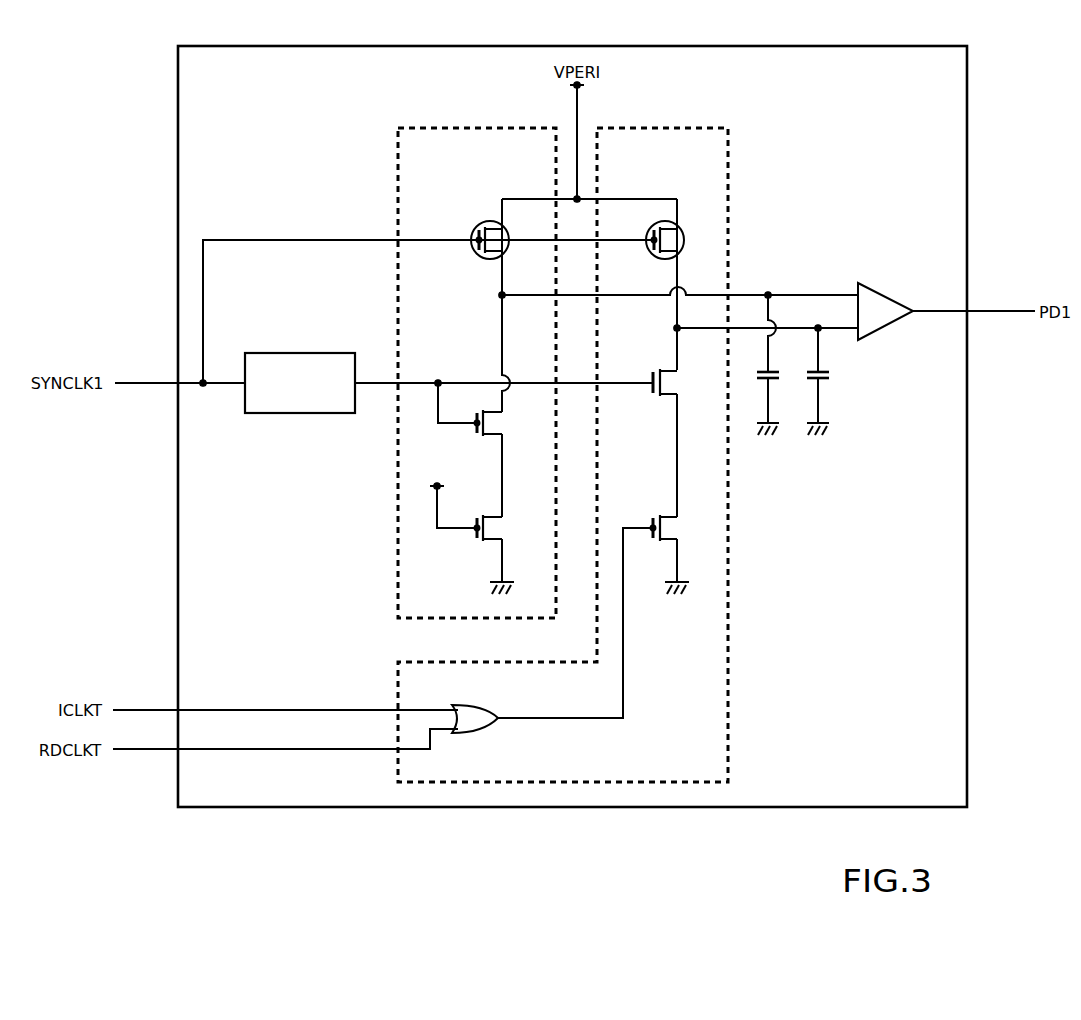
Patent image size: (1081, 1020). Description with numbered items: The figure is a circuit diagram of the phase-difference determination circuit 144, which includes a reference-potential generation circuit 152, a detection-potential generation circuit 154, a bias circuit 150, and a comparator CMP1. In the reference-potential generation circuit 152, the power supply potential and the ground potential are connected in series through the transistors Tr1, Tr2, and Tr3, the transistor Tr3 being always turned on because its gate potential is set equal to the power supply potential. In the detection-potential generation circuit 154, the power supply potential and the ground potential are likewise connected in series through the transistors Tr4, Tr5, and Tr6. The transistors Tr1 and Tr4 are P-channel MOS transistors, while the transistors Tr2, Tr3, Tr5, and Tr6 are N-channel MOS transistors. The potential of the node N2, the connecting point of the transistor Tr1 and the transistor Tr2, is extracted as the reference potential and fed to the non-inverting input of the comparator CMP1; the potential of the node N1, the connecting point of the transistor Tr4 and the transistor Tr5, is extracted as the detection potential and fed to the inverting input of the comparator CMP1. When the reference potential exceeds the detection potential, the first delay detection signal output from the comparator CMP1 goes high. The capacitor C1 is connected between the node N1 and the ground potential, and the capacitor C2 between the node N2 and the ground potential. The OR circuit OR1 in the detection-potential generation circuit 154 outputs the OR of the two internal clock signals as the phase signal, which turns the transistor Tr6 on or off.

The phase-difference determination circuit 144 is at (550, 894).
The bias circuit 150 is at (303, 353).
The reference-potential generation circuit 152 is at (448, 128).
The detection-potential generation circuit 154 is at (728, 762).
The transistor Tr1 is at (476, 246).
The transistor Tr2 is at (507, 427).
The transistor Tr3 is at (502, 528).
The transistor Tr4 is at (679, 236).
The transistor Tr5 is at (651, 403).
The transistor Tr6 is at (678, 528).
The OR circuit OR1 is at (476, 704).
The comparator CMP1 is at (887, 297).
The capacitor C1 is at (825, 380).
The capacitor C2 is at (776, 363).
The node N1 is at (677, 330).
The node N2 is at (502, 297).